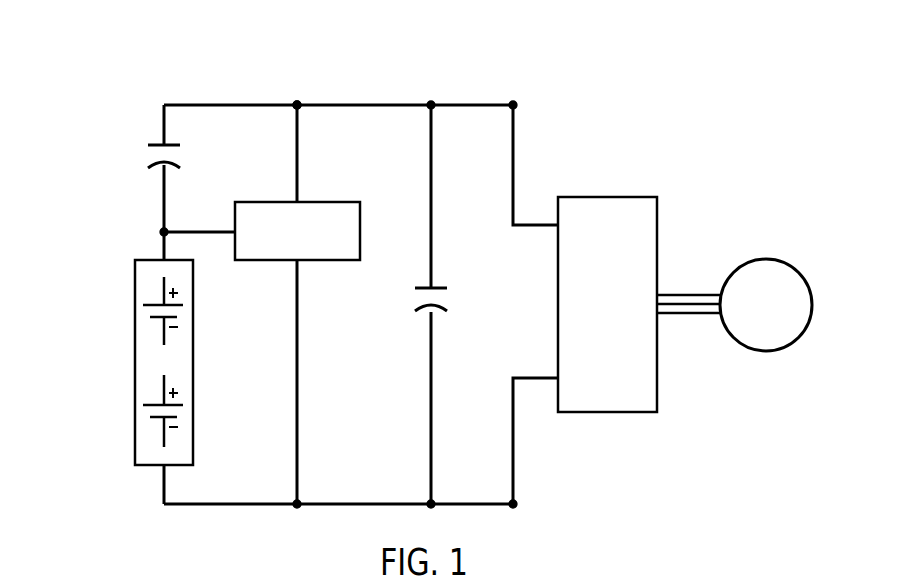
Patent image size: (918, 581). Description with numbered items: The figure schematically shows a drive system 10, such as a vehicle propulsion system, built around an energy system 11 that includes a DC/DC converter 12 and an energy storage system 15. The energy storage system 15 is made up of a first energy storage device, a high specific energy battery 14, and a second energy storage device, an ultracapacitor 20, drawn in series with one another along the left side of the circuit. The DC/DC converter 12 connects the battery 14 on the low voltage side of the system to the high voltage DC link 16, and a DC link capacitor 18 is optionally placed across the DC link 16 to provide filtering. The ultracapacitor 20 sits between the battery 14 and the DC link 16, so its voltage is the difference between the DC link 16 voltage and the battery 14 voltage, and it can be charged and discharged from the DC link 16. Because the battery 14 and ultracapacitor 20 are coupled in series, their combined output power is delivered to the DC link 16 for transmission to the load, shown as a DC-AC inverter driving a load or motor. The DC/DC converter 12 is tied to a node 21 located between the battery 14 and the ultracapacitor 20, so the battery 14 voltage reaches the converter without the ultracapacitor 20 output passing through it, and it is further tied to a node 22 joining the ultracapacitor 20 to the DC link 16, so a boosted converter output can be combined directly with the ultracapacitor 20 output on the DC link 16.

The drive system 10 is at (514, 63).
The energy system 11 is at (213, 51).
The DC/DC converter 12 is at (360, 232).
The first energy storage device (battery) 14 is at (193, 362).
The energy storage system 15 is at (132, 221).
The high voltage DC link 16 is at (340, 105).
The DC link capacitor 18 is at (440, 322).
The second energy storage device (ultracapacitor) 20 is at (180, 133).
The node 21 is at (164, 232).
The node 22 is at (297, 105).